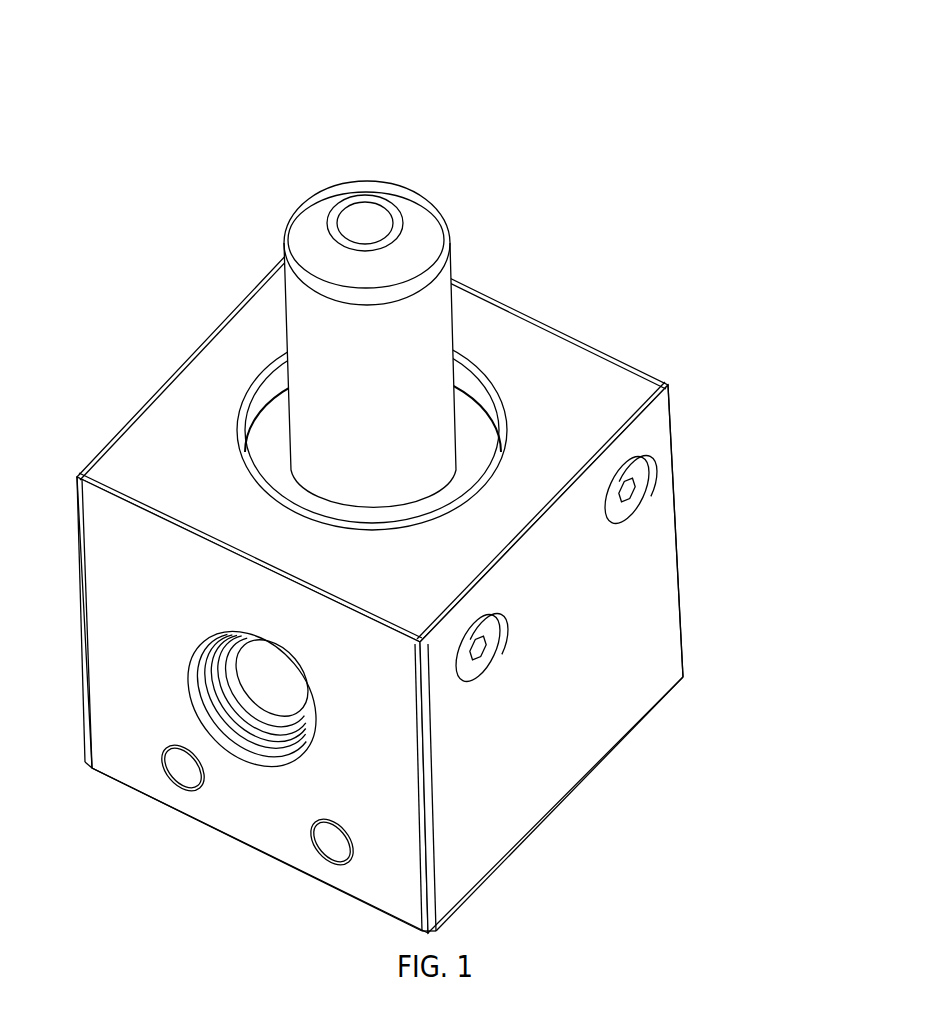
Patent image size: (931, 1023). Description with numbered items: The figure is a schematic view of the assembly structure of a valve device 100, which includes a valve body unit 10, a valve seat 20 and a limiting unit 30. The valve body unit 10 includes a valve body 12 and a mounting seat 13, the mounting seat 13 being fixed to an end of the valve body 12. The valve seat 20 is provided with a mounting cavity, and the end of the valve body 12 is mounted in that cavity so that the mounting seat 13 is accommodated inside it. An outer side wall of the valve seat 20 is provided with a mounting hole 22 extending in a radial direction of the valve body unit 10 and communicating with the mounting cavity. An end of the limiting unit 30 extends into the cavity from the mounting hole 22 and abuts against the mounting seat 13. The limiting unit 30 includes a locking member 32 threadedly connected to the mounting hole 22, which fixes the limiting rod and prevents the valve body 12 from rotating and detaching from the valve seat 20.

The valve device 100 is at (437, 467).
The valve body unit 10 is at (445, 324).
The valve body 12 is at (440, 330).
The mounting seat 13 is at (477, 433).
The valve seat 20 is at (437, 574).
The mounting hole 22 is at (672, 450).
The limiting unit 30 is at (670, 480).
The locking member 32 is at (463, 638).